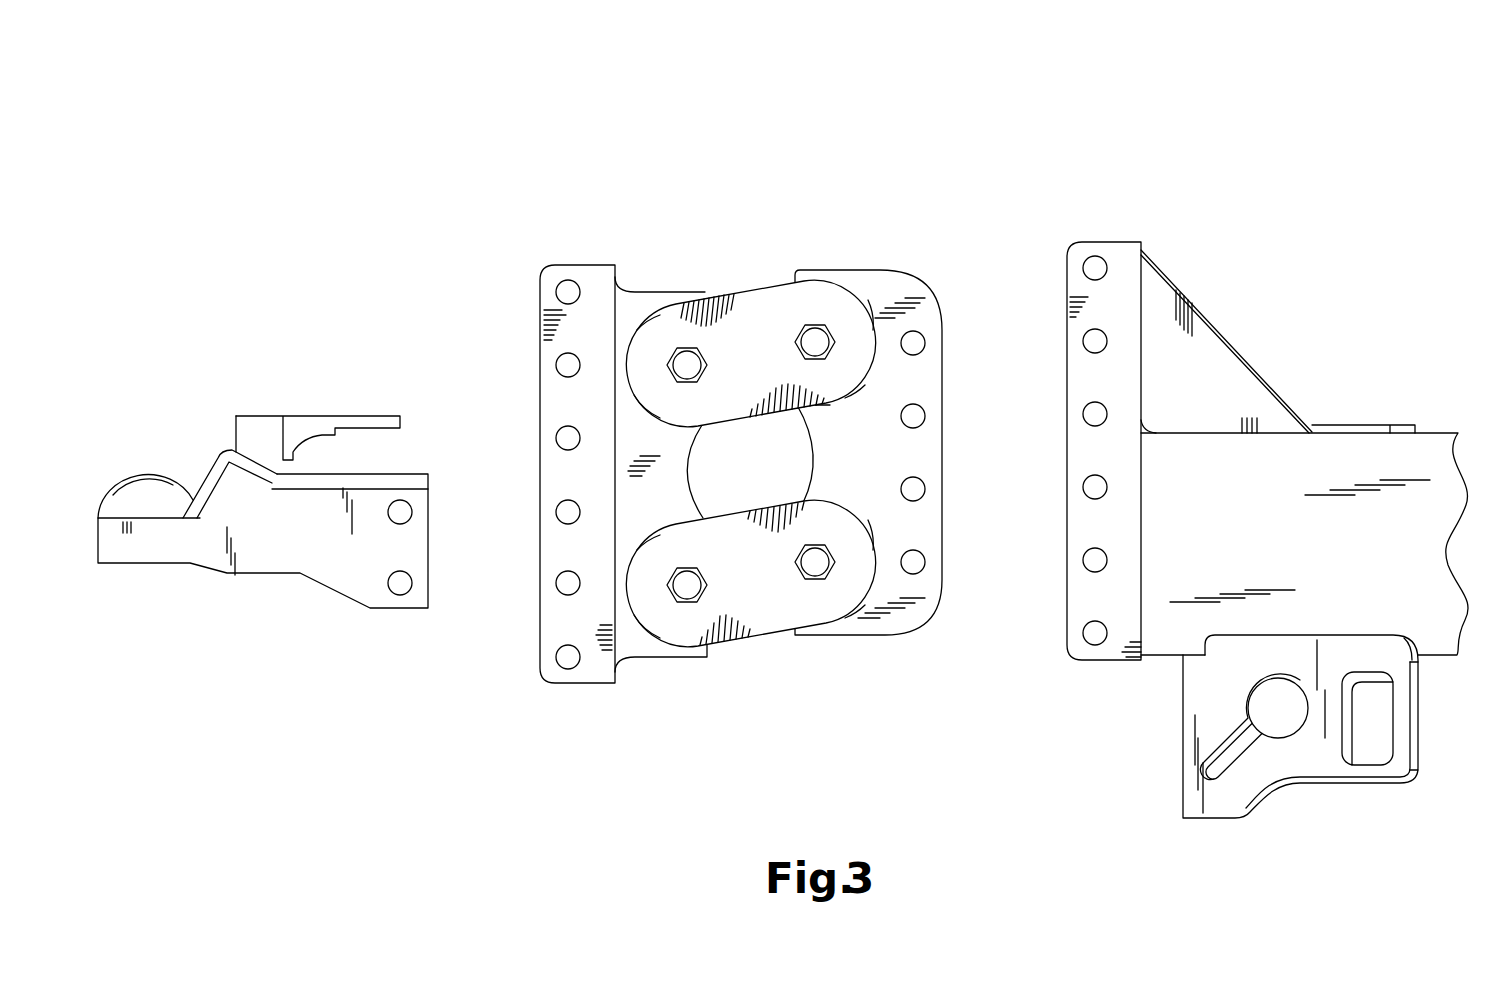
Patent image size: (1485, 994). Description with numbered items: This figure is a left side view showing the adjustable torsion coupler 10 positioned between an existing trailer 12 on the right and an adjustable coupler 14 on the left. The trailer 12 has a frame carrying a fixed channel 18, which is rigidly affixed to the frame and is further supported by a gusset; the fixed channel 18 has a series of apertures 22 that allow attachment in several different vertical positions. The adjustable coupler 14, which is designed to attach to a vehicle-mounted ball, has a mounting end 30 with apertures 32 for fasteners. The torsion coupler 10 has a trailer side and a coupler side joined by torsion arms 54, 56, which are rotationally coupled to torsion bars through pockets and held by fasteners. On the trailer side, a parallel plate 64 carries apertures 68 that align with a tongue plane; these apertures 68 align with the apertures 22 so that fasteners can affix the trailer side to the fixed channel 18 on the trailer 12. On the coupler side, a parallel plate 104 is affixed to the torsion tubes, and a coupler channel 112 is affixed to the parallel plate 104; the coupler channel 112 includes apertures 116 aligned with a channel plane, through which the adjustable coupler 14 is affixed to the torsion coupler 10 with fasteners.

The adjustable torsion coupler 10 is at (723, 176).
The trailer 12 is at (1360, 338).
The adjustable coupler 14 is at (208, 378).
The fixed channel 18 is at (1112, 662).
The apertures 22 is at (1083, 558).
The mounting end 30 is at (397, 624).
The apertures 32 is at (413, 512).
The torsion arm 54 is at (768, 366).
The torsion arm 56 is at (768, 586).
The parallel plate 64 is at (897, 287).
The apertures 68 is at (926, 347).
The parallel plate 104 is at (655, 652).
The coupler channel 112 is at (588, 677).
The apertures 116 is at (556, 295).